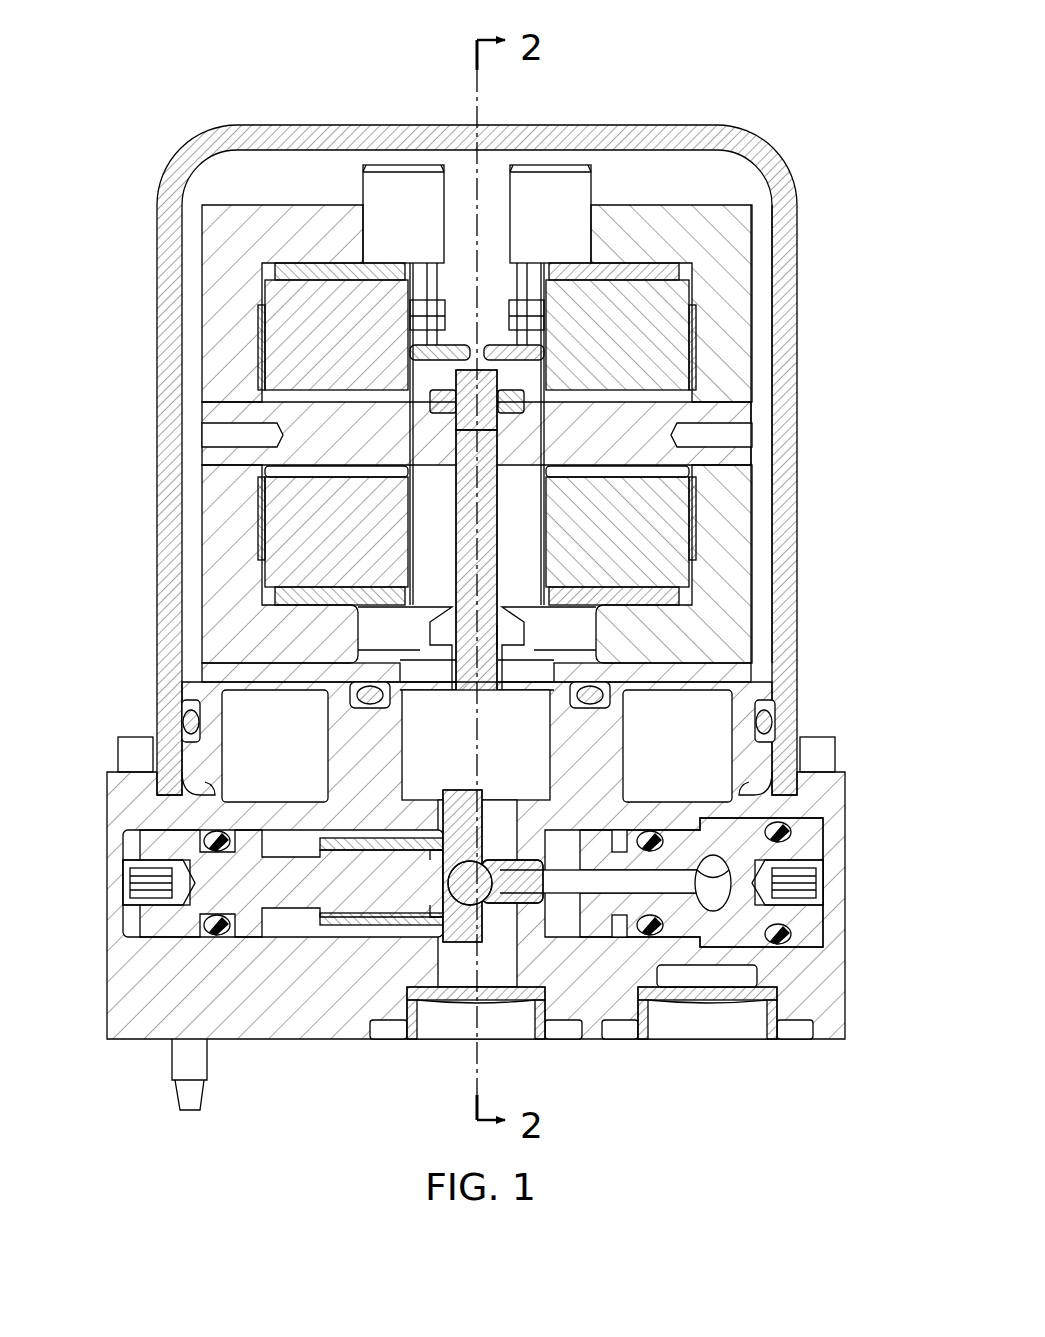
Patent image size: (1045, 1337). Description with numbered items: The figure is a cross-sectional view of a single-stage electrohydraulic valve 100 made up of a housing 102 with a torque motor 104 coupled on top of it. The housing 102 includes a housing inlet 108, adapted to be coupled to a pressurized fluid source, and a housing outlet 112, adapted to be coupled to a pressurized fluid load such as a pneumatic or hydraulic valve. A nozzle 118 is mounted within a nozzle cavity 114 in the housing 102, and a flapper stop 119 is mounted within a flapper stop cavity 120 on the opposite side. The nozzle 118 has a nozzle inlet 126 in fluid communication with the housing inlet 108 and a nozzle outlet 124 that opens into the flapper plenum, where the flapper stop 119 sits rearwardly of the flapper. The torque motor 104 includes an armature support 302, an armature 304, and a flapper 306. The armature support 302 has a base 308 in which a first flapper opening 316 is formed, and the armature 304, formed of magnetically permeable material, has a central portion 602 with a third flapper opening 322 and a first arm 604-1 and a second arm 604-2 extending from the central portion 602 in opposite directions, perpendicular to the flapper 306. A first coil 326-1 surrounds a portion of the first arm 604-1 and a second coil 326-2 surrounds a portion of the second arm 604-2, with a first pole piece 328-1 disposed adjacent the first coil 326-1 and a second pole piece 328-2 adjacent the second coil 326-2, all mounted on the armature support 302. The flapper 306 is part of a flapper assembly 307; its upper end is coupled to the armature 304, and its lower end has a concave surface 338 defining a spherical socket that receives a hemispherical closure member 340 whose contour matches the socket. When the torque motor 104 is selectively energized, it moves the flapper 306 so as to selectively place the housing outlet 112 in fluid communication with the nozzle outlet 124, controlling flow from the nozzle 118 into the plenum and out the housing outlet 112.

The single-stage electrohydraulic valve 100 is at (140, 145).
The housing 102 is at (487, 896).
The torque motor 104 is at (822, 335).
The housing inlet 108 is at (740, 1032).
The housing outlet 112 is at (430, 1040).
The nozzle cavity 114 is at (822, 885).
The nozzle 118 is at (602, 888).
The flapper stop 119 is at (135, 848).
The flapper stop cavity 120 is at (130, 890).
The nozzle outlet 124 is at (490, 860).
The nozzle inlet 126 is at (713, 905).
The armature support 302 is at (758, 673).
The armature 304 is at (210, 455).
The flapper 306 is at (488, 385).
The flapper assembly 307 is at (485, 945).
The base 308 is at (273, 683).
The first flapper opening 316 is at (502, 635).
The third flapper opening 322 is at (496, 473).
The first coil 326-1 is at (290, 335).
The second coil 326-2 is at (650, 510).
The first pole piece 328-1 is at (220, 565).
The second pole piece 328-2 is at (735, 567).
The concave surface 338 is at (446, 872).
The hemispherical closure member 340 is at (446, 905).
The central portion 602 is at (474, 433).
The first arm 604-1 is at (315, 418).
The second arm 604-2 is at (640, 418).